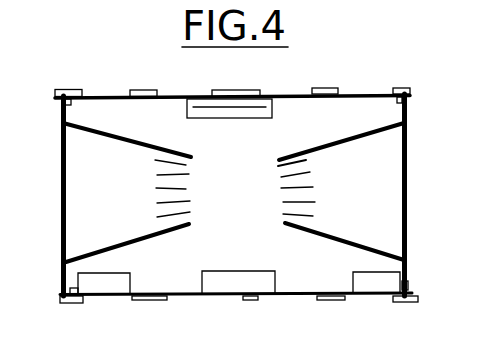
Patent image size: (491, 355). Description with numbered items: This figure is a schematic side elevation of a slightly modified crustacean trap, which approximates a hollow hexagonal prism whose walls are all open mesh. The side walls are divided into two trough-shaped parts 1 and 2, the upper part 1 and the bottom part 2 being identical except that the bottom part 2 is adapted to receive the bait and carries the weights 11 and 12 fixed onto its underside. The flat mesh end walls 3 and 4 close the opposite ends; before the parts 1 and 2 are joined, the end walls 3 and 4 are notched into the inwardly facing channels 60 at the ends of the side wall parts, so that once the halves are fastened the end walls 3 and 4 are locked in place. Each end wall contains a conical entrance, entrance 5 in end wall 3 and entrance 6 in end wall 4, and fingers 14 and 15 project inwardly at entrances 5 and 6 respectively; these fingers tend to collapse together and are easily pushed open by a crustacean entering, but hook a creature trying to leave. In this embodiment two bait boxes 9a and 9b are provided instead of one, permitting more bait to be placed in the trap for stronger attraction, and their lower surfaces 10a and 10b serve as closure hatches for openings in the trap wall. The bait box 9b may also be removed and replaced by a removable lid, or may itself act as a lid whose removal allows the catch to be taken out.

The side wall part 1 is at (368, 88).
The side wall part 2 is at (302, 294).
The end wall 3 is at (410, 268).
The end wall 4 is at (63, 283).
The entrance 5 is at (388, 177).
The entrance 6 is at (78, 195).
The channels 60 is at (408, 100).
The bait box 9a is at (210, 284).
The bait box 9b is at (272, 110).
The lower surface 10a is at (211, 99).
The lower surface 10b is at (273, 295).
The weight 11 is at (372, 284).
The weight 12 is at (116, 284).
The fingers 14 is at (297, 190).
The fingers 15 is at (182, 178).